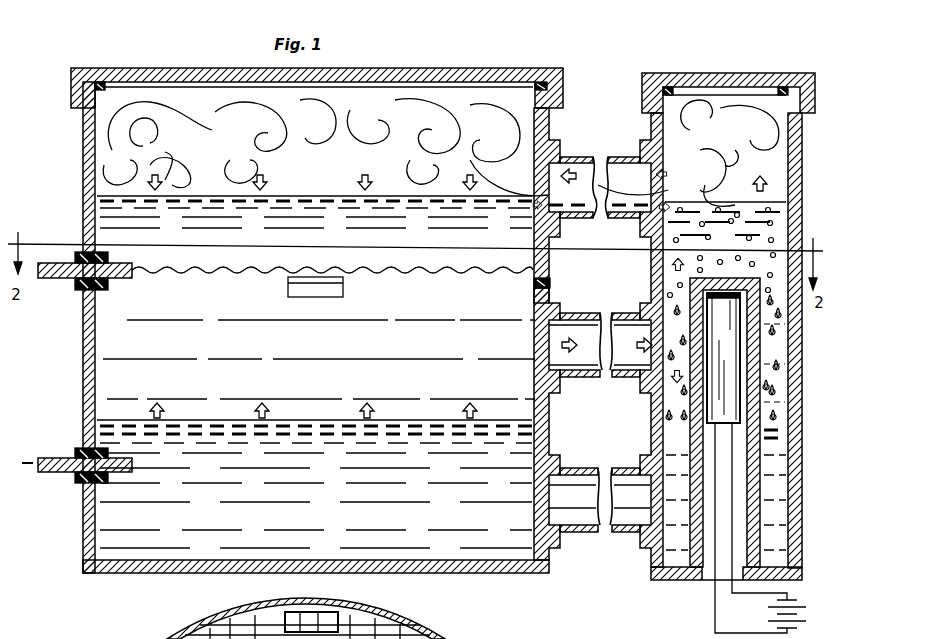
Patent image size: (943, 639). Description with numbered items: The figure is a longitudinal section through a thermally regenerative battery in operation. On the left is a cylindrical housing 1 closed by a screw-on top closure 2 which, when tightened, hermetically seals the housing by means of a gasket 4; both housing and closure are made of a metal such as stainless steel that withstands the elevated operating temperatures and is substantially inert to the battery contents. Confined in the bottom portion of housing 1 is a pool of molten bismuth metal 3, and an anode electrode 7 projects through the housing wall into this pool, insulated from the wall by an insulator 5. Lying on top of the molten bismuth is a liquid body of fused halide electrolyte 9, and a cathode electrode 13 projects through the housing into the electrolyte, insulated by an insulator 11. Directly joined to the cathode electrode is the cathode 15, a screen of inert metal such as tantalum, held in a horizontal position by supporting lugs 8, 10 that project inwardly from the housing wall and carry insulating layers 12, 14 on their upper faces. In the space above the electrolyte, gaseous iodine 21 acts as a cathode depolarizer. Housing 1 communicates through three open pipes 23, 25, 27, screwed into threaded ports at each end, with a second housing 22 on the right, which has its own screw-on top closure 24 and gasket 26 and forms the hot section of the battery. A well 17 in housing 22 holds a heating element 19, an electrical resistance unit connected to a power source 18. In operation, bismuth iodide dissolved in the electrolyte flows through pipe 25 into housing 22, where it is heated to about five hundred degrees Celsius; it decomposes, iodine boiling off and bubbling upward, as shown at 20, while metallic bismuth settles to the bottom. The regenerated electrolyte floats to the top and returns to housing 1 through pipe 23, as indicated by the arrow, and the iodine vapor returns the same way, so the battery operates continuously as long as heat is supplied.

The cylindrical housing 1 is at (83, 358).
The screw-on top closure 2 is at (480, 68).
The molten bismuth metal 3 is at (94, 533).
The gasket 4 is at (541, 70).
The insulator 5 is at (78, 452).
The anode electrode 7 is at (65, 479).
The supporting lug 8 is at (288, 287).
The electrolyte 9 is at (94, 335).
The supporting lug 10 is at (549, 299).
The insulator 11 is at (75, 254).
The insulating layer 12 is at (343, 281).
The cathode electrode 13 is at (72, 285).
The insulating layer 14 is at (548, 281).
The cathode 15 is at (428, 279).
The well 17 is at (705, 578).
The power source 18 is at (774, 612).
The heating element 19 is at (723, 358).
The iodine bubbling upward 20 is at (797, 211).
The gaseous iodine 21 is at (97, 127).
The housing 22 is at (794, 487).
The pipe 23 is at (588, 164).
The screw-on top closure 24 is at (724, 72).
The pipe 25 is at (580, 323).
The gasket 26 is at (795, 72).
The pipe 27 is at (580, 478).